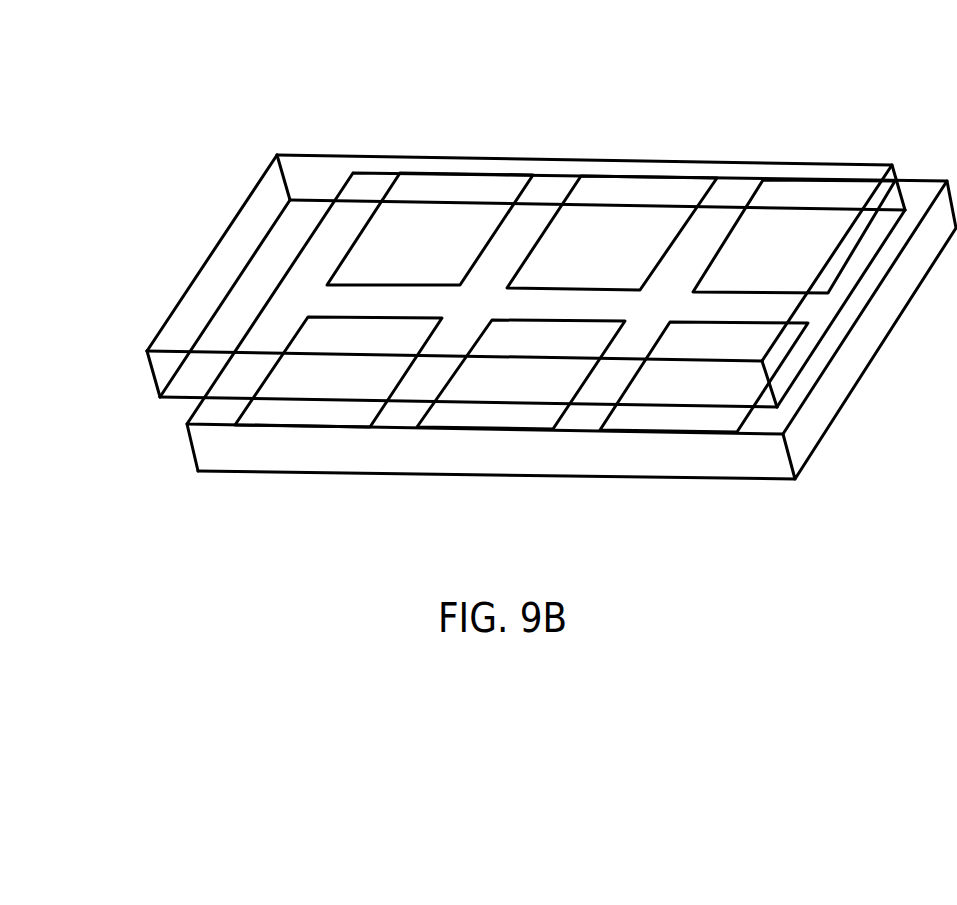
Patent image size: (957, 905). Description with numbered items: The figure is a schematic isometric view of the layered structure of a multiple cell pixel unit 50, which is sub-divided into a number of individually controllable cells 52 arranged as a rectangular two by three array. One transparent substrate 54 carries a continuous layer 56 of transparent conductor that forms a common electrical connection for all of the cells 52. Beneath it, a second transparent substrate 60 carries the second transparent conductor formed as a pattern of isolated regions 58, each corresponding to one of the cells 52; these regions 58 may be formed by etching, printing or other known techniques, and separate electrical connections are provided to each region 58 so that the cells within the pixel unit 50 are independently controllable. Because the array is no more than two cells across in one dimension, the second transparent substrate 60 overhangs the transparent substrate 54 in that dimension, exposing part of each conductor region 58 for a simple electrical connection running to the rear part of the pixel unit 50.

The pixel unit 50 is at (571, 273).
The individually controllable cells 52 is at (315, 335).
The transparent substrate 54 is at (252, 245).
The continuous layer of transparent conductor 56 is at (250, 290).
The isolated regions 58 is at (310, 411).
The second transparent substrate 60 is at (802, 422).